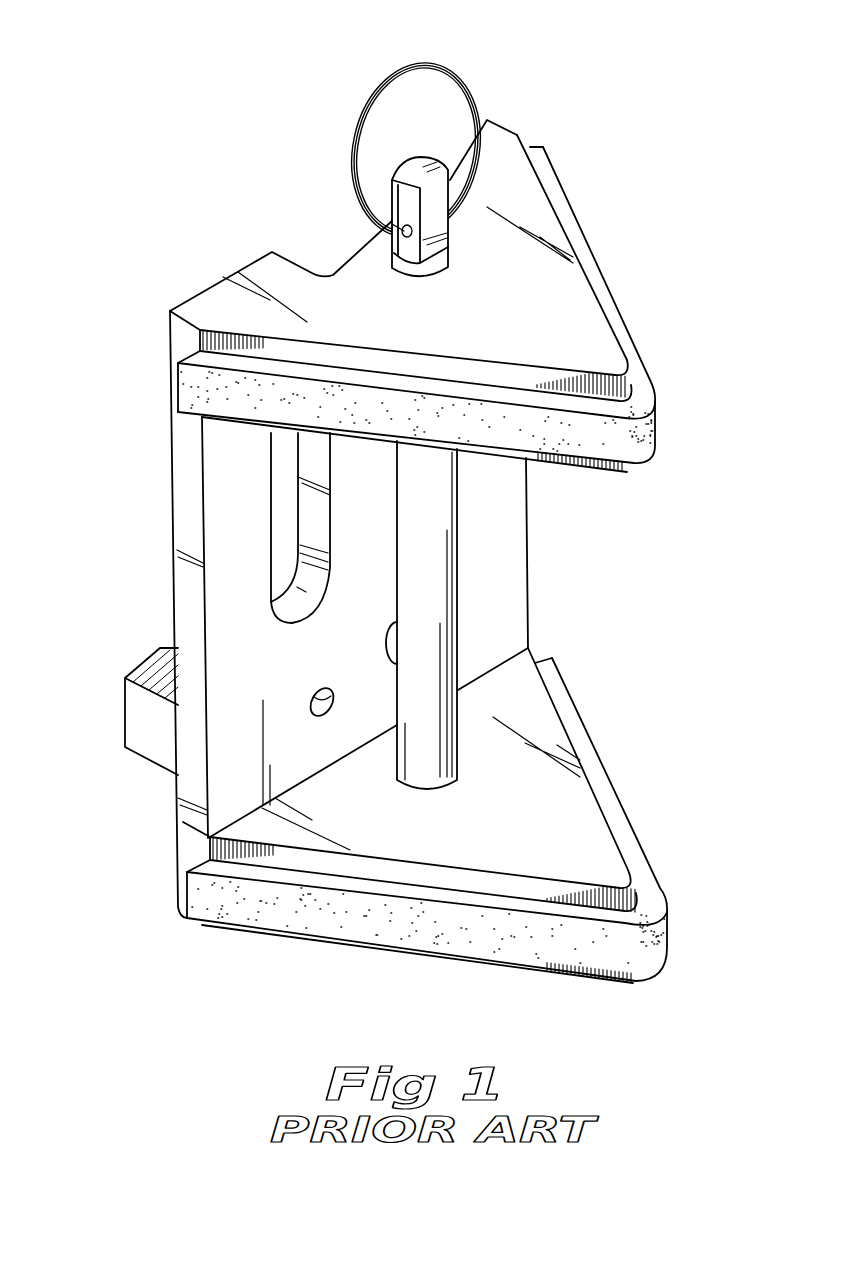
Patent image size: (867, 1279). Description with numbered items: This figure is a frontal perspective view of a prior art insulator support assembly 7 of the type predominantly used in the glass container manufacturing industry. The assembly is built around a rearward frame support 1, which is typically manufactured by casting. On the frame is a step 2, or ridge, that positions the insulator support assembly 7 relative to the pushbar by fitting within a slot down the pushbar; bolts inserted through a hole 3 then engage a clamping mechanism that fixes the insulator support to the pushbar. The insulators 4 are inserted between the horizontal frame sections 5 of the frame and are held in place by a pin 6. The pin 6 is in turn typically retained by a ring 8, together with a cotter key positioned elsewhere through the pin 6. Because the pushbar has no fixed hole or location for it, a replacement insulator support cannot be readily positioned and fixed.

The rearward frame support 1 is at (183, 510).
The step 2 is at (140, 722).
The hole 3 is at (330, 713).
The insulator 4 is at (617, 328).
The horizontal frame section 5 is at (613, 477).
The pin 6 is at (436, 270).
The insulator support assembly 7 is at (395, 506).
The ring 8 is at (483, 100).